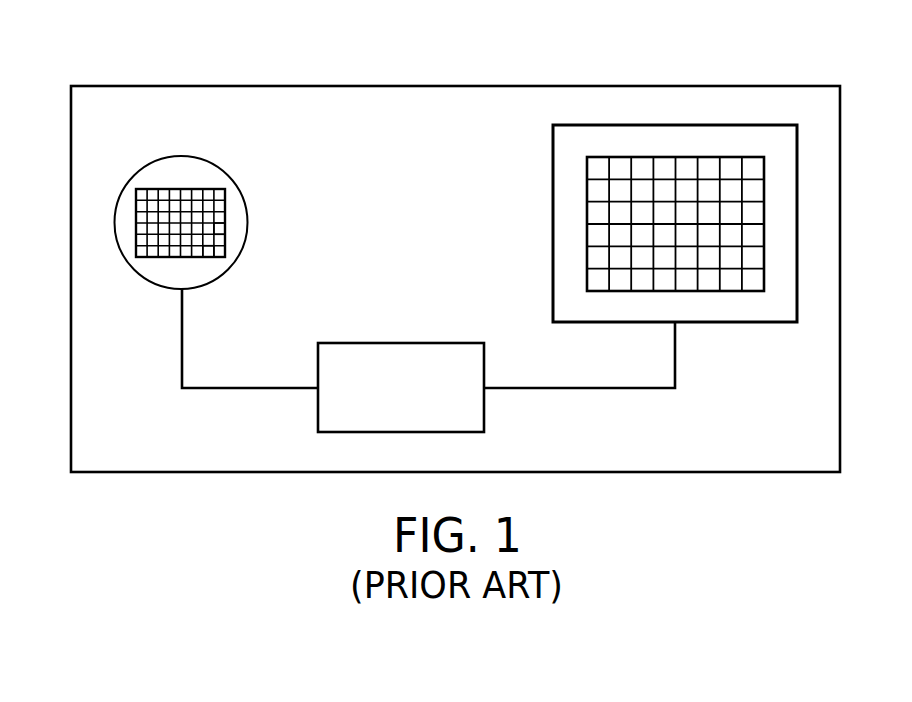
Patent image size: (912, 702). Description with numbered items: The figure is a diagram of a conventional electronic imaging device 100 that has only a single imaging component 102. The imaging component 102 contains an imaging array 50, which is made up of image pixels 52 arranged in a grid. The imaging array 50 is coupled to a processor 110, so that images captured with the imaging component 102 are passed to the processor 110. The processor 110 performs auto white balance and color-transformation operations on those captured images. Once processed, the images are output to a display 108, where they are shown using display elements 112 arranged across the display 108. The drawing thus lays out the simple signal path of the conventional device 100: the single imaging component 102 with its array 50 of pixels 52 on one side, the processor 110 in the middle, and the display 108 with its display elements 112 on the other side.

The device 100 is at (126, 53).
The imaging component 102 is at (152, 166).
The imaging array 50 is at (208, 190).
The image pixels 52 is at (220, 228).
The display 108 is at (560, 180).
The processor 110 is at (410, 350).
The display elements 112 is at (598, 233).